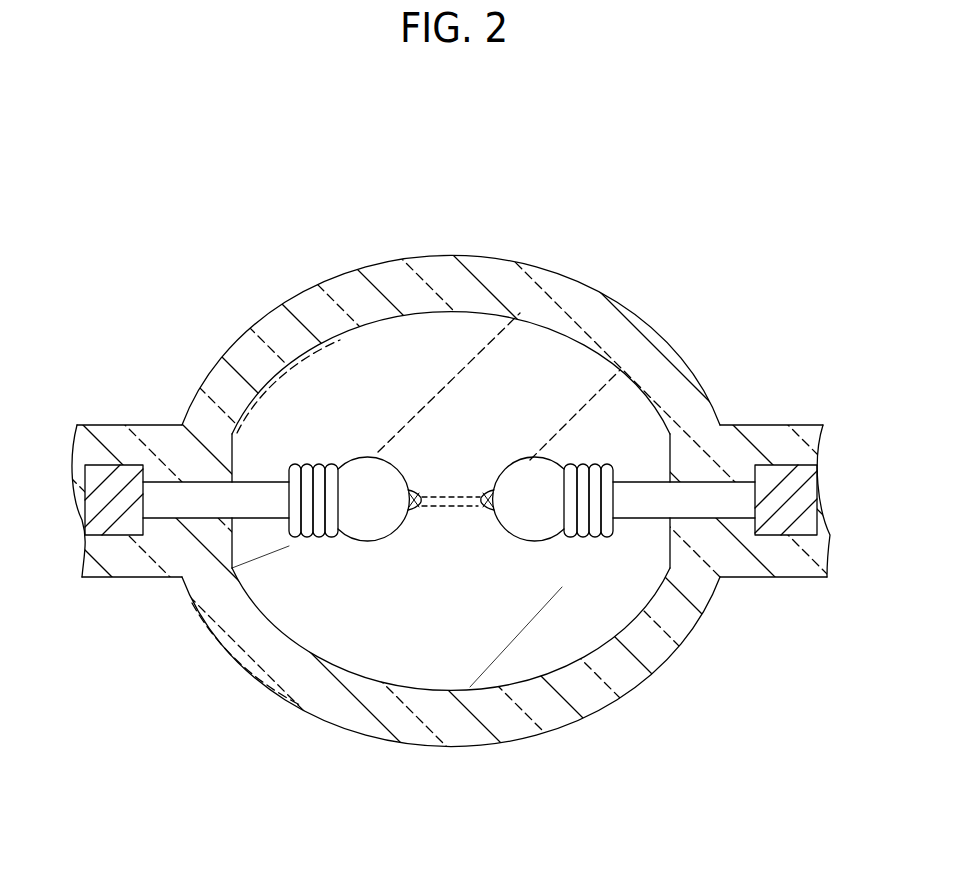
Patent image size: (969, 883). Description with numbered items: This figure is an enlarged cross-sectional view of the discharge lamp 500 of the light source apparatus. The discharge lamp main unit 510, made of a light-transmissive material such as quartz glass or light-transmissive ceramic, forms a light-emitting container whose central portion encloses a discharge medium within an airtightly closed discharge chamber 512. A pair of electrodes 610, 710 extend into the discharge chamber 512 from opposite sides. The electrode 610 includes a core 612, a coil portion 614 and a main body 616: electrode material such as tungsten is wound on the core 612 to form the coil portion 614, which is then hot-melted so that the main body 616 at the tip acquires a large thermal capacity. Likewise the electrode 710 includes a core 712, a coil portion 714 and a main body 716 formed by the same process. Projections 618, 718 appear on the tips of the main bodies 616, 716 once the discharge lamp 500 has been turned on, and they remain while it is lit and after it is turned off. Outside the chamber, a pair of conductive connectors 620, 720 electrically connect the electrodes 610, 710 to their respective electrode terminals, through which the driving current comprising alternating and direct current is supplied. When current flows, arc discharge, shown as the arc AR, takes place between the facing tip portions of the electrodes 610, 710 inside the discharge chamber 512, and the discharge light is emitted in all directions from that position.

The discharge lamp 500 is at (596, 137).
The discharge lamp main unit 510 is at (307, 303).
The discharge chamber 512 is at (518, 363).
The electrode 610 is at (338, 559).
The core 612 is at (173, 510).
The coil portion 614 is at (338, 541).
The main body 616 is at (380, 540).
The projection 618 is at (415, 508).
The conductive connector 620 is at (115, 478).
The electrode 710 is at (535, 550).
The core 712 is at (727, 512).
The coil portion 714 is at (613, 541).
The main body 716 is at (512, 535).
The projection 718 is at (480, 500).
The conductive connector 720 is at (780, 477).
The arc AR is at (428, 492).